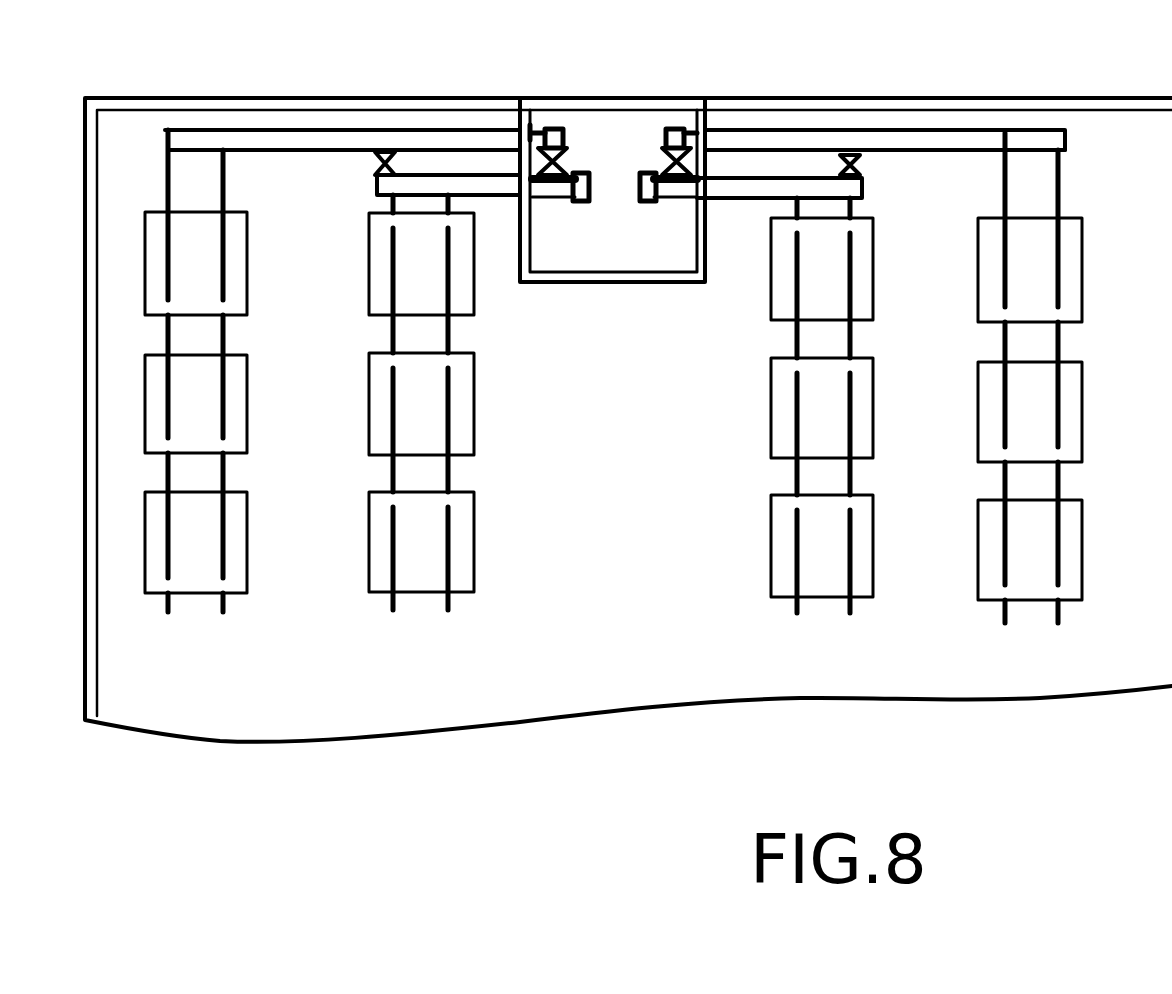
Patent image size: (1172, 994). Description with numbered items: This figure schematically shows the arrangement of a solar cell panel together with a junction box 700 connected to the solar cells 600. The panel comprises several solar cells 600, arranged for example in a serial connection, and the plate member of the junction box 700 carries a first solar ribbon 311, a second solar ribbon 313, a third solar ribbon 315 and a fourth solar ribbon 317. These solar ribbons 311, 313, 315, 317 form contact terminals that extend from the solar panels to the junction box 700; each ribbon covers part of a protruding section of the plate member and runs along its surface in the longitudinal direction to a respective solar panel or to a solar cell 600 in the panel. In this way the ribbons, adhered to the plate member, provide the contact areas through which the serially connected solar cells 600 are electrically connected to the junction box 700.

The first solar ribbon 311 is at (713, 135).
The second solar ribbon 313 is at (675, 188).
The third solar ribbon 315 is at (550, 186).
The fourth solar ribbon 317 is at (535, 132).
The solar cells 600 is at (993, 432).
The junction box 700 is at (657, 127).